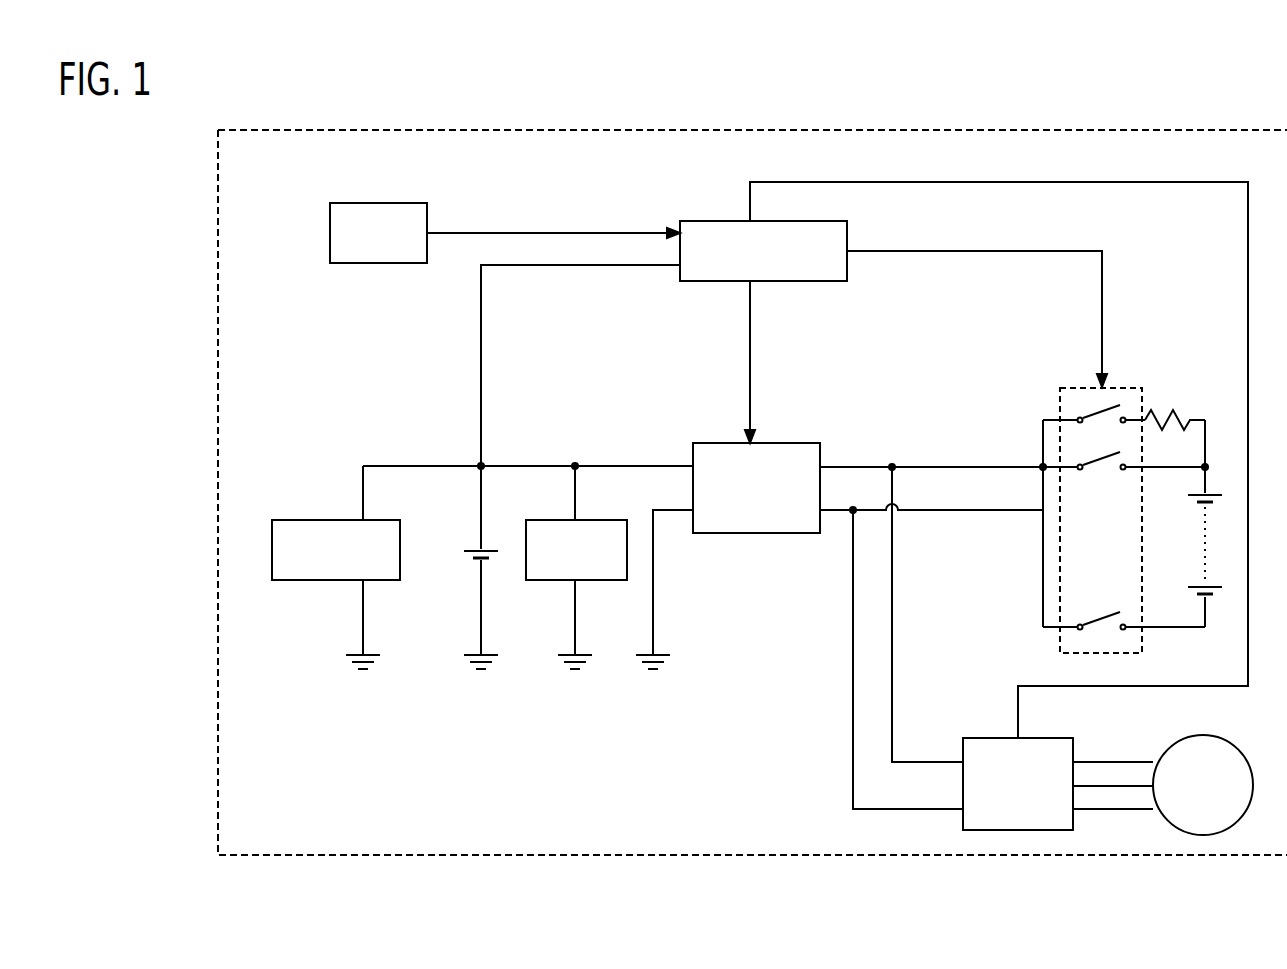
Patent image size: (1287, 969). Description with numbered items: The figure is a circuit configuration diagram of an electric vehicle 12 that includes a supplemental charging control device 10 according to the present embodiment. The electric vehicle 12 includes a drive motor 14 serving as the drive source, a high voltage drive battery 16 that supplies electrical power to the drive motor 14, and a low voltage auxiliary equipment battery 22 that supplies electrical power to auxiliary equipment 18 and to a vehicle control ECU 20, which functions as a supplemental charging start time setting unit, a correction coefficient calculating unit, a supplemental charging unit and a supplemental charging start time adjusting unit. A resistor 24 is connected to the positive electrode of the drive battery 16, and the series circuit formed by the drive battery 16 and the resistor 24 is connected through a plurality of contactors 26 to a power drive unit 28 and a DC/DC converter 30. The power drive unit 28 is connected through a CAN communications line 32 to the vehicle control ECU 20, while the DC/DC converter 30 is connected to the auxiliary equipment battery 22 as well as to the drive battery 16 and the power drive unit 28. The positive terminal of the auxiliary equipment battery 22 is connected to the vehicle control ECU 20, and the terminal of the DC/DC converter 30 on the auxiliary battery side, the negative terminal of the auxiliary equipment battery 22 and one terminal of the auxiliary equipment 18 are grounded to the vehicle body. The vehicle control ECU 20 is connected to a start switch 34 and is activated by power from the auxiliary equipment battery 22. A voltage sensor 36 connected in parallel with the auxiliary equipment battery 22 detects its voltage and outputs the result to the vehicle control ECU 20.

The supplemental charging control device 10 is at (360, 93).
The electric vehicle 12 is at (727, 129).
The drive motor 14 is at (1195, 736).
The drive battery 16 is at (1200, 512).
The auxiliary equipment 18 is at (382, 520).
The vehicle control ECU 20 is at (717, 221).
The auxiliary equipment battery 22 is at (472, 555).
The resistor 24 is at (1172, 412).
The contactors 26 is at (1095, 414).
The power drive unit 28 is at (985, 738).
The DC/DC converter 30 is at (775, 443).
The CAN communications line 32 is at (978, 182).
The start switch 34 is at (378, 203).
The voltage sensor 36 is at (590, 520).